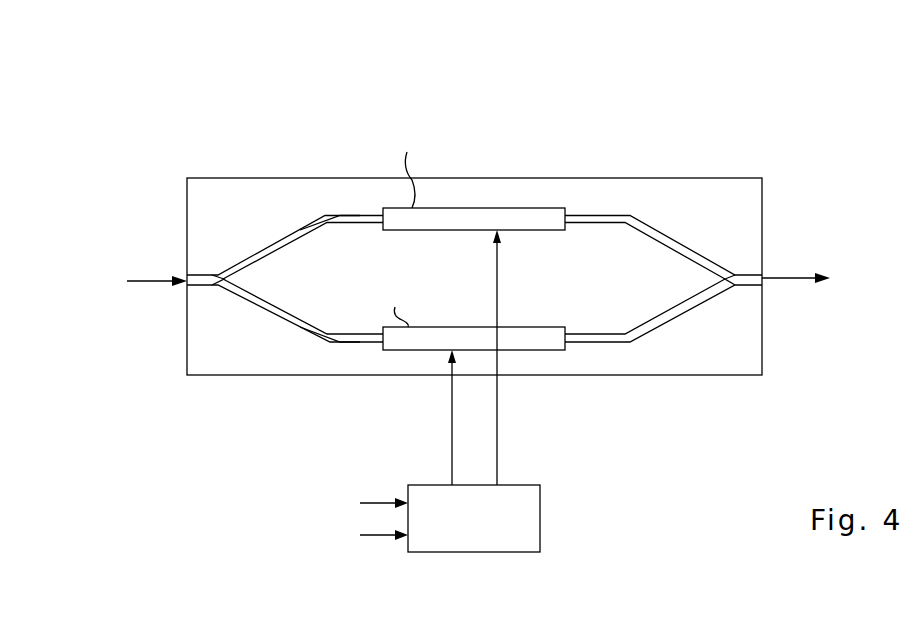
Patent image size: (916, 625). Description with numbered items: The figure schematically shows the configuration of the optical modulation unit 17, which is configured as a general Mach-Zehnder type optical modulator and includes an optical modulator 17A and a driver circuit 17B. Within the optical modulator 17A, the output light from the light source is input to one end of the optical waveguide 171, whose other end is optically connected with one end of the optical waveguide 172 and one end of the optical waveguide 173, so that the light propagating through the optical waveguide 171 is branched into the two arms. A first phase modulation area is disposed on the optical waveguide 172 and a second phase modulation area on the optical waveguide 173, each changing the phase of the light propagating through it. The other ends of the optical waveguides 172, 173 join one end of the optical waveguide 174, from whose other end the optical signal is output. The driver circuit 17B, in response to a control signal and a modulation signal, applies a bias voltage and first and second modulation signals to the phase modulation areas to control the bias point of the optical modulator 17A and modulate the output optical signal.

The optical modulation unit 17 is at (470, 104).
The optical modulator 17A is at (238, 195).
The driver circuit 17B is at (540, 517).
The optical waveguide 171 is at (212, 274).
The optical waveguide 172 is at (340, 214).
The optical waveguide 173 is at (338, 343).
The optical waveguide 174 is at (745, 274).